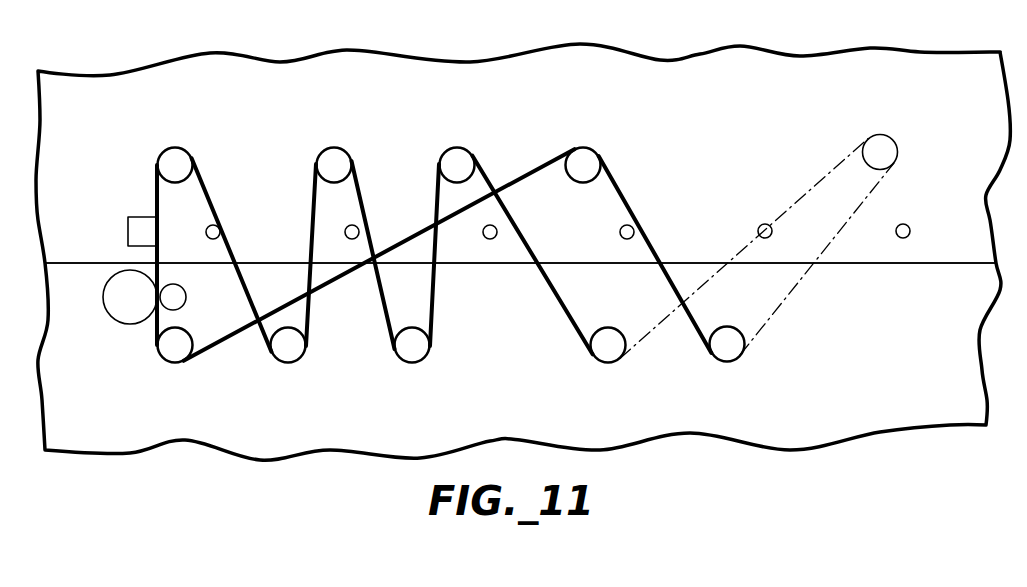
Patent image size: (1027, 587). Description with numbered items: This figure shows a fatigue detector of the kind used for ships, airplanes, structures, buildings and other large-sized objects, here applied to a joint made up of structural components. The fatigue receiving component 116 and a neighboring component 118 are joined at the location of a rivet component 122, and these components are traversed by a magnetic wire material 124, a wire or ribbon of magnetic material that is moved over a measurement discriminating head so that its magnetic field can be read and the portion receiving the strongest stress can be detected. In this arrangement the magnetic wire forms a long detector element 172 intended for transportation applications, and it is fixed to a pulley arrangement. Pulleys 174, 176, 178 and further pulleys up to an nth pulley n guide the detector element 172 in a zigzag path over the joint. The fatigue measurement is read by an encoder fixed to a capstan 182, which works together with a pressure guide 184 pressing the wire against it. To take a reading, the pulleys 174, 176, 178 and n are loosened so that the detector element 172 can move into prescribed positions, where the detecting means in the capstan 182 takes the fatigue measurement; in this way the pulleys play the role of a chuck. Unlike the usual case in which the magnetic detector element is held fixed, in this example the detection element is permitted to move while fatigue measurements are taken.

The fatigue receiving component 116 is at (958, 196).
The component 118 is at (956, 311).
The rivet component 122 is at (145, 223).
The magnetic wire material 124 is at (623, 195).
The long detector element 172 is at (205, 348).
The pulley 174 is at (405, 347).
The pulley 176 is at (724, 344).
The pulley 178 is at (333, 160).
The capstan 182 is at (127, 310).
The pressure guide 184 is at (202, 312).
The pulley n is at (878, 147).